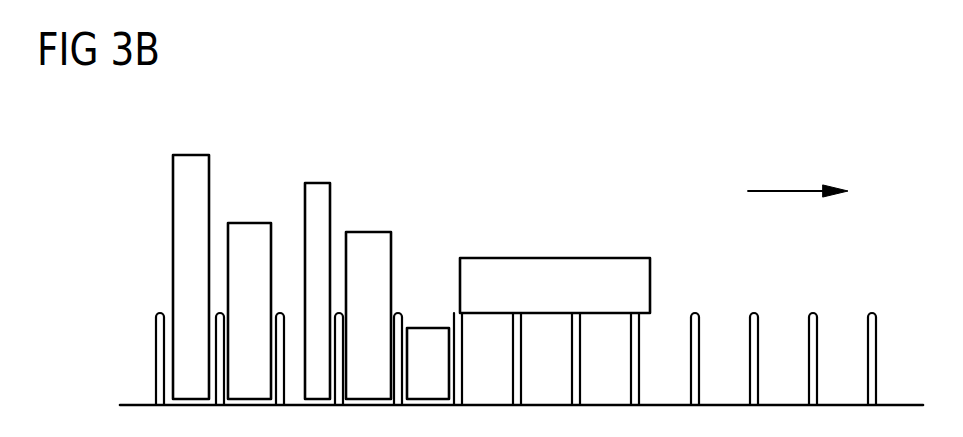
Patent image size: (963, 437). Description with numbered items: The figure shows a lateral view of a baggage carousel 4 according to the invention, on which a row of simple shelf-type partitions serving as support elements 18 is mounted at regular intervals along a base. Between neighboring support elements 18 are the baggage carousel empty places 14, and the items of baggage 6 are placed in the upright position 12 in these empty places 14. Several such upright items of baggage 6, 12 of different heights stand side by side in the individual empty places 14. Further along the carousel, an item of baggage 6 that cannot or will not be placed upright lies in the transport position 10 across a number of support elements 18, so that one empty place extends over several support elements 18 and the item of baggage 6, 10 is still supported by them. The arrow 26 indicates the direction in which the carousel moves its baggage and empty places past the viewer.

The sorting/handling arrangement 4 is at (93, 178).
The item of baggage 6 is at (411, 244).
The transport position 10 is at (553, 270).
The upright position 12 is at (250, 223).
The baggage carousel empty places 14 is at (662, 322).
The support elements 18 is at (872, 313).
The transport direction 26 is at (785, 190).